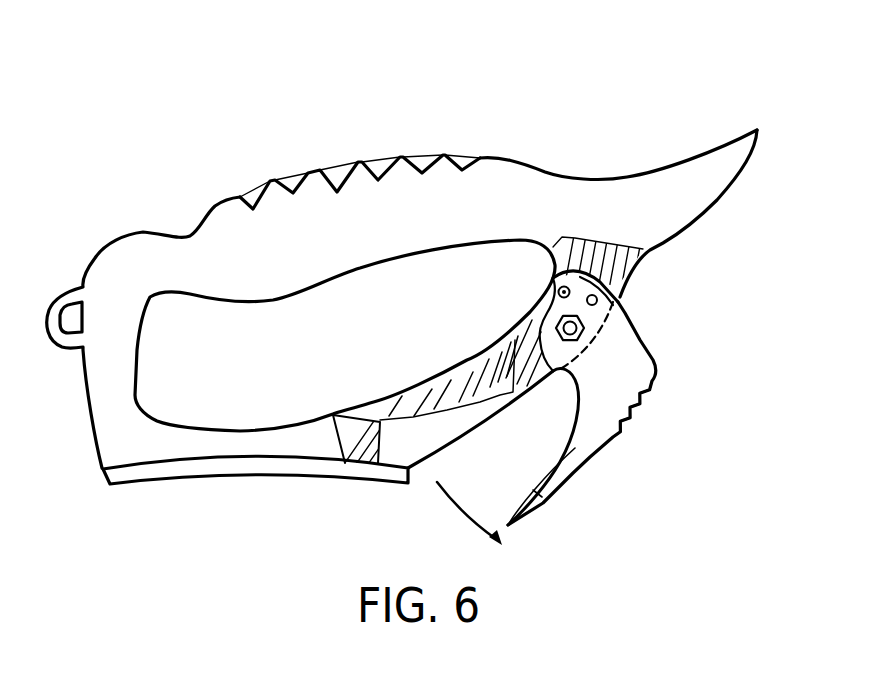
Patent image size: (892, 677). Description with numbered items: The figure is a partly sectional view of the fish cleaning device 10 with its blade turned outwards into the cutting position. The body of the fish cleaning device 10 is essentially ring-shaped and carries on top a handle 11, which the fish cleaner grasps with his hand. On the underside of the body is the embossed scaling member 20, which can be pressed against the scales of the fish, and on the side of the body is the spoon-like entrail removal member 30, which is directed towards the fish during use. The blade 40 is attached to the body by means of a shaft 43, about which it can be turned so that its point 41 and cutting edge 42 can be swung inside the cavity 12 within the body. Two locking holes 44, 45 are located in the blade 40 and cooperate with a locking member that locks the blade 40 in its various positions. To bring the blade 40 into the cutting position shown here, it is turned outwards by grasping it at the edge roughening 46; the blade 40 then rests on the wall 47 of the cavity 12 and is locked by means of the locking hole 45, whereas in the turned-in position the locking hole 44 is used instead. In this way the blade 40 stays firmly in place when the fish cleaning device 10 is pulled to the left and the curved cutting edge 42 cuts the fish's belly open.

The fish cleaning device 10 is at (399, 118).
The handle 11 is at (310, 168).
The cavity 12 is at (418, 443).
The scaling member 20 is at (223, 480).
The entrail removal member 30 is at (685, 153).
The blade 40 is at (637, 363).
The point 41 is at (505, 522).
The cutting edge 42 is at (545, 470).
The shaft 43 is at (556, 325).
The locking hole 44 is at (559, 290).
The locking hole 45 is at (600, 305).
The edge roughening 46 is at (627, 412).
The wall 47 is at (580, 287).